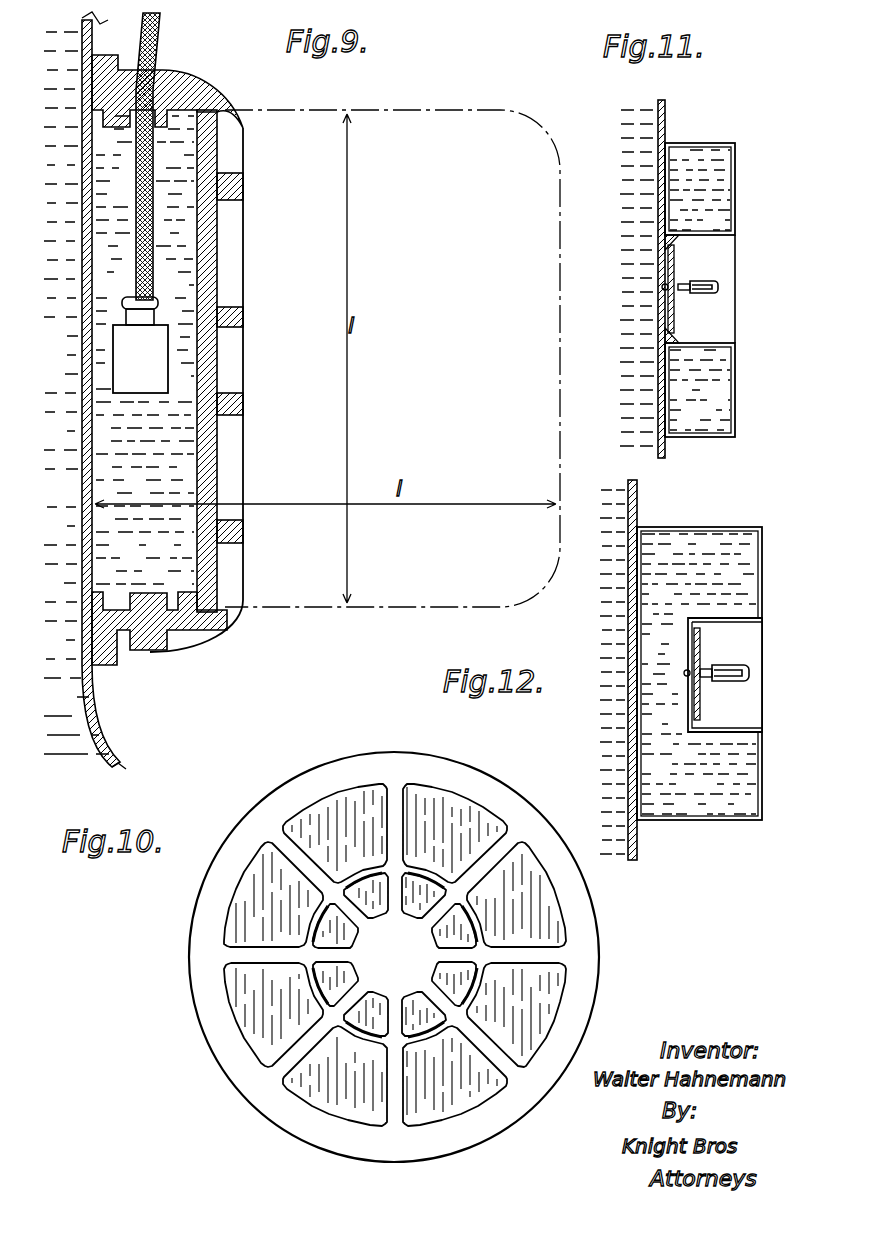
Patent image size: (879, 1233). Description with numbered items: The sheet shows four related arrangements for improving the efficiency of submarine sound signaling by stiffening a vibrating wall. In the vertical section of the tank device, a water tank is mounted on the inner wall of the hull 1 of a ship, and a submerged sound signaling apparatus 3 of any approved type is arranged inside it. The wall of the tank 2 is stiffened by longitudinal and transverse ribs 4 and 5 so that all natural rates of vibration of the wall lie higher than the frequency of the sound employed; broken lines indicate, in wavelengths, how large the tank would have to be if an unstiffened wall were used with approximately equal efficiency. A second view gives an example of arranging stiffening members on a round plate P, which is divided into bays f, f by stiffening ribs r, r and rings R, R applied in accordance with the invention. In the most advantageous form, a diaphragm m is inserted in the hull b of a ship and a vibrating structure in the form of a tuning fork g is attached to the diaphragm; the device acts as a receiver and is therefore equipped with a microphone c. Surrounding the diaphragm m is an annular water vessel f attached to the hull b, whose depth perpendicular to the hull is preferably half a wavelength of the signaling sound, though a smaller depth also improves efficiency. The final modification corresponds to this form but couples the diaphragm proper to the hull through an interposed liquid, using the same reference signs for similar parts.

In FIG. 9, the hull 1 is at (82, 340).
In FIG. 9, the wall of the tank 2 is at (218, 262).
In FIG. 9, the submerged sound signaling apparatus 3 is at (140, 345).
In FIG. 9, the longitudinal rib 4 is at (244, 365).
In FIG. 9, the transverse rib 5 is at (204, 96).
In FIG. 11, the hull b is at (667, 136).
In FIG. 12, the hull b is at (640, 514).
In FIG. 11, the annular water vessel f is at (737, 199).
In FIG. 12, the annular water vessel f is at (762, 582).
In FIG. 10, the annular water vessel f is at (518, 890).
In FIG. 11, the diaphragm m is at (673, 264).
In FIG. 12, the diaphragm m is at (700, 650).
In FIG. 11, the microphone c is at (718, 289).
In FIG. 12, the microphone c is at (749, 676).
In FIG. 11, the tuning fork g is at (688, 298).
In FIG. 12, the tuning fork g is at (705, 681).
In FIG. 10, the stiffening rib r is at (393, 817).
In FIG. 10, the ring R is at (223, 850).
In FIG. 10, the round plate P is at (390, 955).